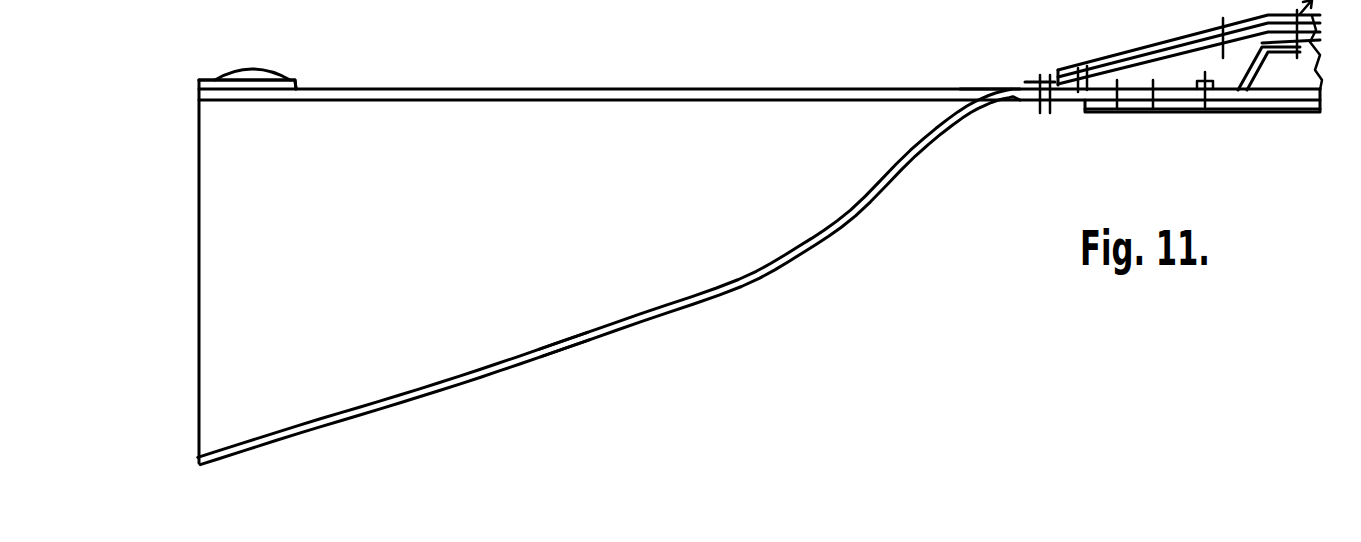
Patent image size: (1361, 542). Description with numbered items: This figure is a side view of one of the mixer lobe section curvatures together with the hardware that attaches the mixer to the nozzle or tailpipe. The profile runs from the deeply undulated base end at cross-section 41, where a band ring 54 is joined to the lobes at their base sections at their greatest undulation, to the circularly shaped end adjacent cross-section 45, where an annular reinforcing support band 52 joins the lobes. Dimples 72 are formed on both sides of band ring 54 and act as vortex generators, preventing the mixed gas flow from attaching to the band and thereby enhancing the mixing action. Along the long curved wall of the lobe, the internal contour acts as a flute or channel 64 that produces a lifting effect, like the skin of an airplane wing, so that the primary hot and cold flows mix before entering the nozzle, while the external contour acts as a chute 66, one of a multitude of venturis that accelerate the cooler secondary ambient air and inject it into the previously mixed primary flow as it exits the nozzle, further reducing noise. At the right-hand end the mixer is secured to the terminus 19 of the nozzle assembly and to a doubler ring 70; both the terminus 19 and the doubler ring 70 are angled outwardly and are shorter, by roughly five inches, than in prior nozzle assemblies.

The container body 41 is at (198, 213).
The dimples 72 is at (242, 68).
The band ring 54 is at (293, 81).
The flutes or channels 64 is at (553, 349).
The chutes 66 is at (560, 355).
The flange junction 45 is at (1005, 92).
The annular reinforcing support band 52 is at (1050, 88).
The doubler ring 70 is at (1262, 112).
The terminus 19 is at (1122, 50).